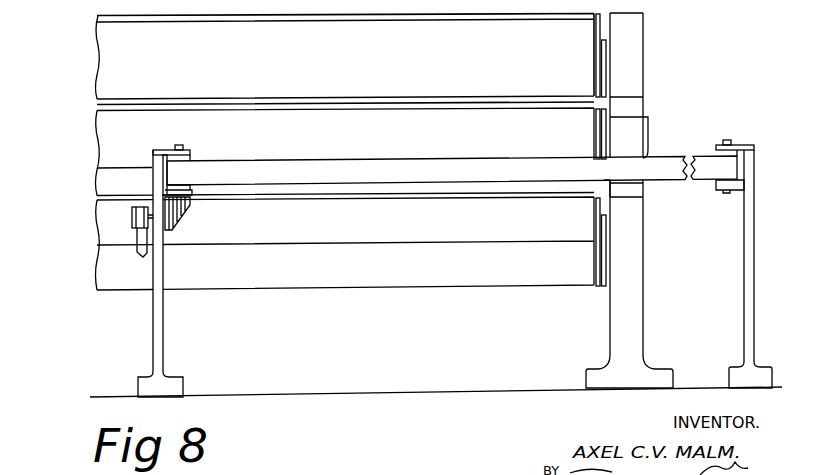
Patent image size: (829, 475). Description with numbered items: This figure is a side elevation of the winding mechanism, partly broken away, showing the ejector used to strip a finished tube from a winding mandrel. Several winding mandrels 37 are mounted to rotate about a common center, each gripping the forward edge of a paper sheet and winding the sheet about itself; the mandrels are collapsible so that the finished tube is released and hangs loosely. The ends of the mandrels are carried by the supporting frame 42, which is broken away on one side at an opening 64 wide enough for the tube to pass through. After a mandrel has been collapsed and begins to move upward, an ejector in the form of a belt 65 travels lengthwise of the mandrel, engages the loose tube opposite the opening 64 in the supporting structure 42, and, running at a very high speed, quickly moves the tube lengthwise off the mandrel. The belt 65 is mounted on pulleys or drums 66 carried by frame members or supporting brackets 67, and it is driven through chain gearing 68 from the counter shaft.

The winding mandrel 37 is at (138, 90).
The supporting frame 42 is at (627, 232).
The opening in supporting structure 64 is at (629, 195).
The ejector belt 65 is at (387, 163).
The pulleys or drums 66 is at (193, 158).
The supporting brackets 67 is at (161, 270).
The chain gearing 68 is at (141, 248).